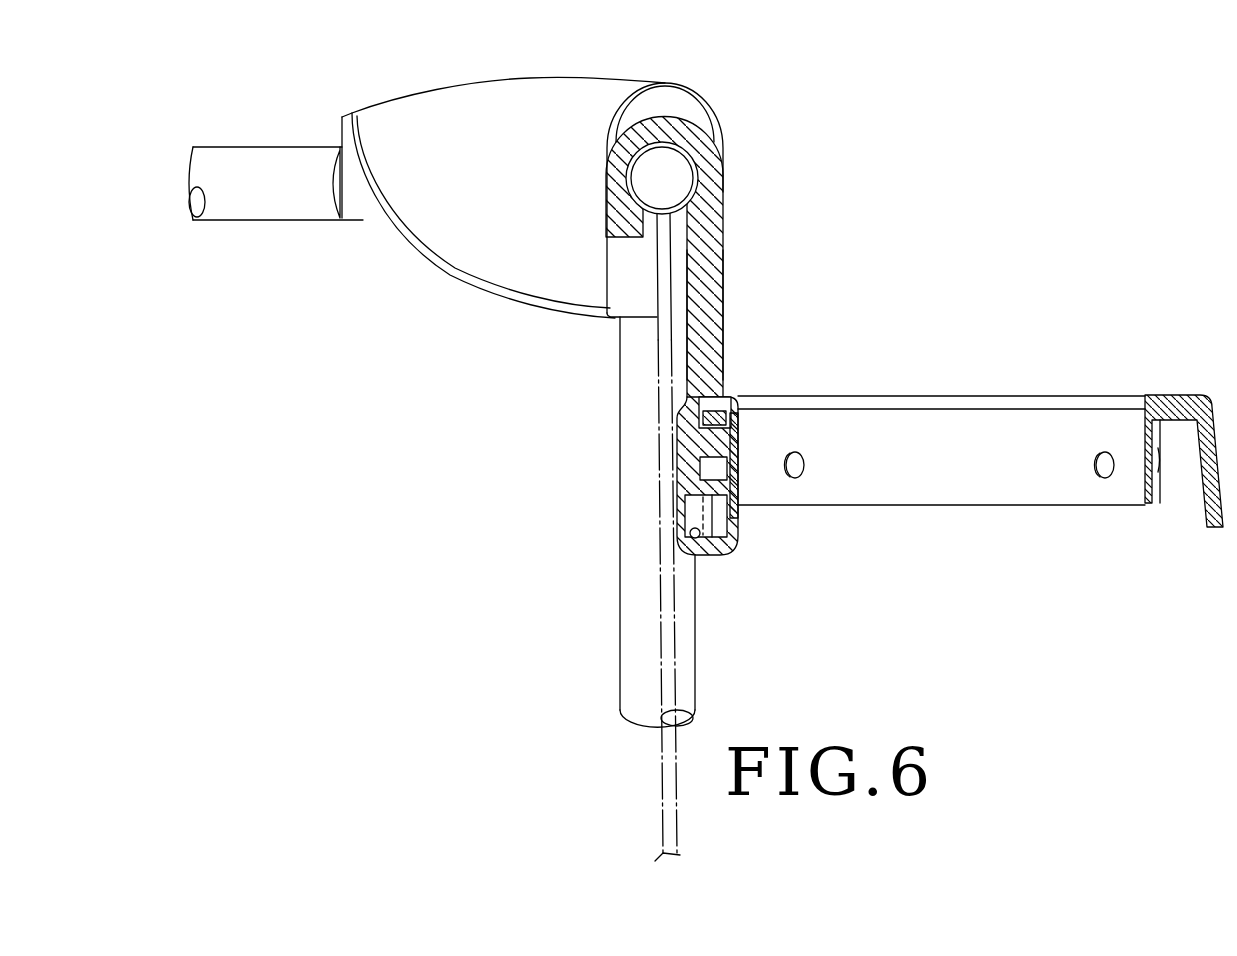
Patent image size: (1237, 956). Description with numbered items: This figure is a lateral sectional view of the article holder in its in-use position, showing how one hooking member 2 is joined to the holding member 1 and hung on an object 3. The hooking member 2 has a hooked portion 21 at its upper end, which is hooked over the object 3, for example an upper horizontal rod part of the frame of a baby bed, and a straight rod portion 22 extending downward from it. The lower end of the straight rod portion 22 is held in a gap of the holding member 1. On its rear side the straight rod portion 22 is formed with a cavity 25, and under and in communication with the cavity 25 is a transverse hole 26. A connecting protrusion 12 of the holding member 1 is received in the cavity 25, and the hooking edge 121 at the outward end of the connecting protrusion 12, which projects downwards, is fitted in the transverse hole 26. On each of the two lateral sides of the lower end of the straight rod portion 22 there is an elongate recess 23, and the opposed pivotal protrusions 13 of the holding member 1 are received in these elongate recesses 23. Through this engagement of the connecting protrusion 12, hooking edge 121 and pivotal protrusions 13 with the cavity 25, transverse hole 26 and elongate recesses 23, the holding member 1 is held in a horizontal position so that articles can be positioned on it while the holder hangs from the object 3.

The holding member 1 is at (1016, 386).
The connecting protrusion 12 is at (737, 413).
The hooking edge 121 is at (724, 432).
The pivotal protrusion 13 is at (697, 537).
The hooking member 2 is at (737, 221).
The hooked portion 21 is at (690, 132).
The straight rod portion 22 is at (727, 301).
The elongate recess 23 is at (692, 507).
The cavity 25 is at (722, 397).
The transverse hole 26 is at (705, 438).
The object 3 is at (466, 69).